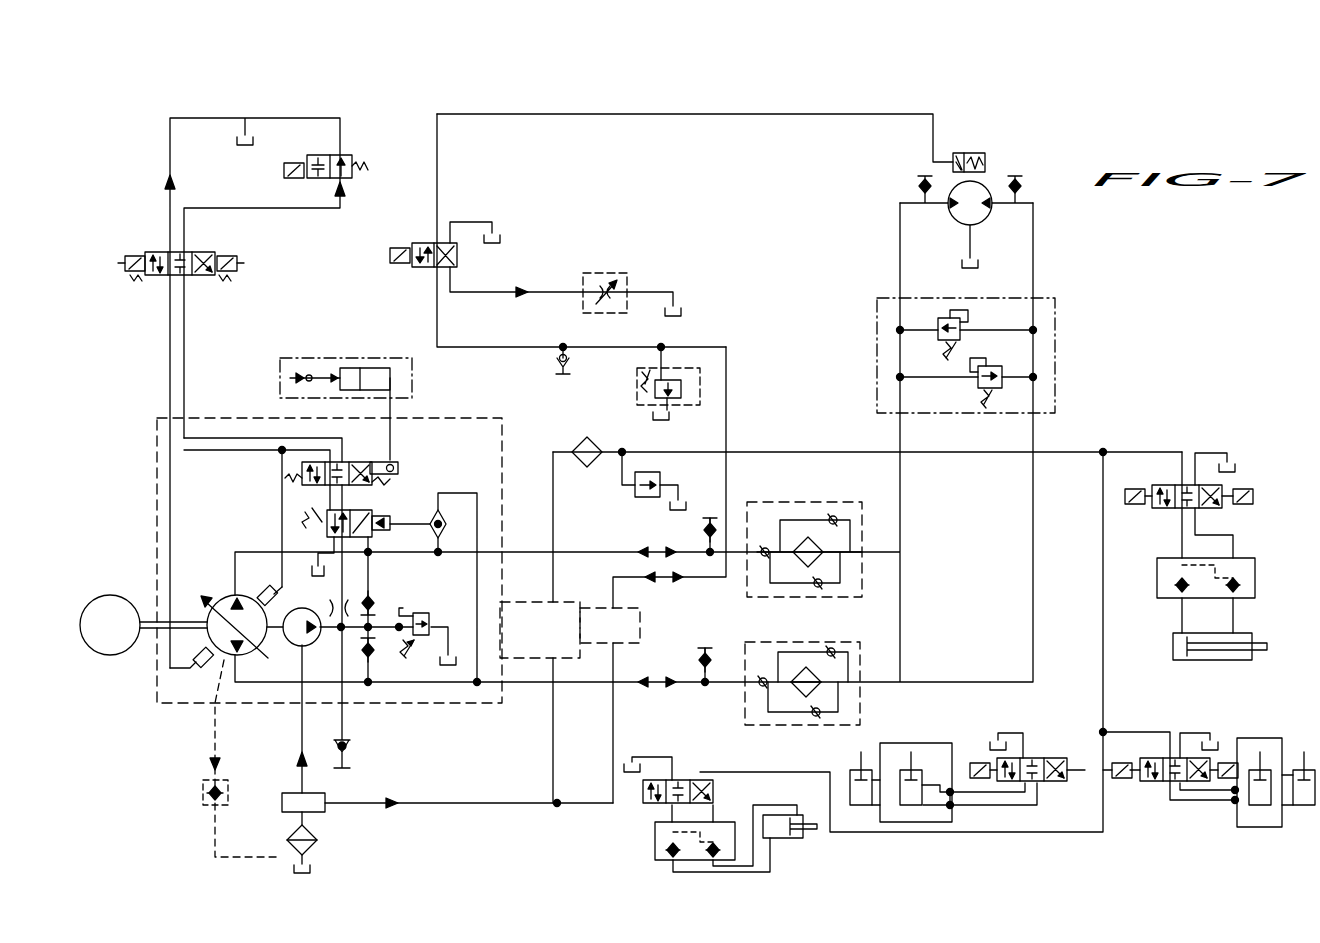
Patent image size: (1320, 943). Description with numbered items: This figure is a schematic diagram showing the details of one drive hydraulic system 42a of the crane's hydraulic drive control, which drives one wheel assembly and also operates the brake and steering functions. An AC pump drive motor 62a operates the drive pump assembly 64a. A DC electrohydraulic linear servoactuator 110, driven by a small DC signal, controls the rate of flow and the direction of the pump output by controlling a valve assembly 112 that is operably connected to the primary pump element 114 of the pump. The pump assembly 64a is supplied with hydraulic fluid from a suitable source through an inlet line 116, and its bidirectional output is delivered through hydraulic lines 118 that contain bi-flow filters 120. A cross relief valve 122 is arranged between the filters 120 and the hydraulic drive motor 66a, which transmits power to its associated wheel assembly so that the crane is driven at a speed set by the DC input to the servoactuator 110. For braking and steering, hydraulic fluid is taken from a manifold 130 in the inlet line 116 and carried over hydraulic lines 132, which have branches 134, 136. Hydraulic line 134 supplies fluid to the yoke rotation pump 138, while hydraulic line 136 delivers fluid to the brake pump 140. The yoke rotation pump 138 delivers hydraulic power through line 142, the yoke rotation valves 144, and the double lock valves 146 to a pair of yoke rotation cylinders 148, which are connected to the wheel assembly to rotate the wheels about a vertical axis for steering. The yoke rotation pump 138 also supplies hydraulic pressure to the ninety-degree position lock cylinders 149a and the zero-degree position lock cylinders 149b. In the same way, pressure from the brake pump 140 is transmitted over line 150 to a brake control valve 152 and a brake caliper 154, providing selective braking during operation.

The drive hydraulic system 42a is at (146, 413).
The AC pump drive motor 62a is at (109, 594).
The drive pump assembly 64a is at (386, 703).
The hydraulic drive motor 66a is at (978, 190).
The DC electrohydraulic linear servoactuator 110 is at (346, 358).
The valve assembly 112 is at (372, 479).
The primary pump element 114 is at (226, 598).
The inlet line 116 is at (302, 728).
The hydraulic lines 118 is at (523, 548).
The bi-flow filters 120 is at (782, 504).
The cross relief valve 122 is at (1052, 360).
The manifold 130 is at (318, 812).
The hydraulic lines 132 is at (478, 806).
The hydraulic line 134 is at (556, 744).
The hydraulic line 136 is at (613, 748).
The yoke rotation pump 138 is at (563, 612).
The brake pump 140 is at (642, 614).
The line 142 is at (603, 443).
The yoke rotation valves 144 is at (1228, 486).
The double lock valves 146 is at (1248, 567).
The yoke rotation cylinders 148 is at (1245, 633).
The 90° position lock cylinders 149a is at (947, 832).
The 0° position lock cylinders 149b is at (1215, 806).
The line 150 is at (727, 364).
The brake control valve 152 is at (418, 242).
The brake caliper 154 is at (967, 153).